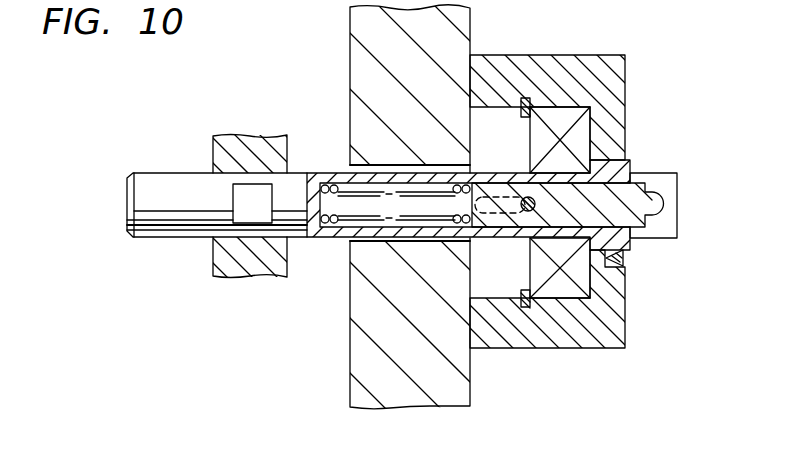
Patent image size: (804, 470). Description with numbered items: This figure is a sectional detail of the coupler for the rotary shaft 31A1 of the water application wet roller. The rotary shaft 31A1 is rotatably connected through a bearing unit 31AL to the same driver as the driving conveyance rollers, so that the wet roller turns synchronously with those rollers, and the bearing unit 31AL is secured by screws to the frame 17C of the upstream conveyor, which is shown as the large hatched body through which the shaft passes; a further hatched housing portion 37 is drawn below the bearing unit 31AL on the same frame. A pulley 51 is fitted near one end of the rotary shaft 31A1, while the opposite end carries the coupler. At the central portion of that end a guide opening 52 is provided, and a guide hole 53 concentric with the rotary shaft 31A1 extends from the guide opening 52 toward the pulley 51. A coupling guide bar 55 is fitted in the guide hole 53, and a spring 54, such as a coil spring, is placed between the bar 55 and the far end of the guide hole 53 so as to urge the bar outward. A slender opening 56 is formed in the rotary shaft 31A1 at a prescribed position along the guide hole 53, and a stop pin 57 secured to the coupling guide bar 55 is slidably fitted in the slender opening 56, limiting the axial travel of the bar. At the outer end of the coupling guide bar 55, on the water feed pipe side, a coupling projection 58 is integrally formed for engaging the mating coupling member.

The frame 17C is at (471, 36).
The bearing unit 31AL is at (608, 68).
The rotary shaft 31A1 is at (178, 182).
The lower bearing housing 37 is at (581, 278).
The pulley 51 is at (266, 263).
The guide opening 52 is at (668, 190).
The guide hole 53 is at (352, 207).
The spring 54 is at (333, 177).
The coupling guide bar 55 is at (518, 177).
The slender opening 56 is at (489, 214).
The stop pin 57 is at (530, 212).
The coupling projection 58 is at (653, 191).